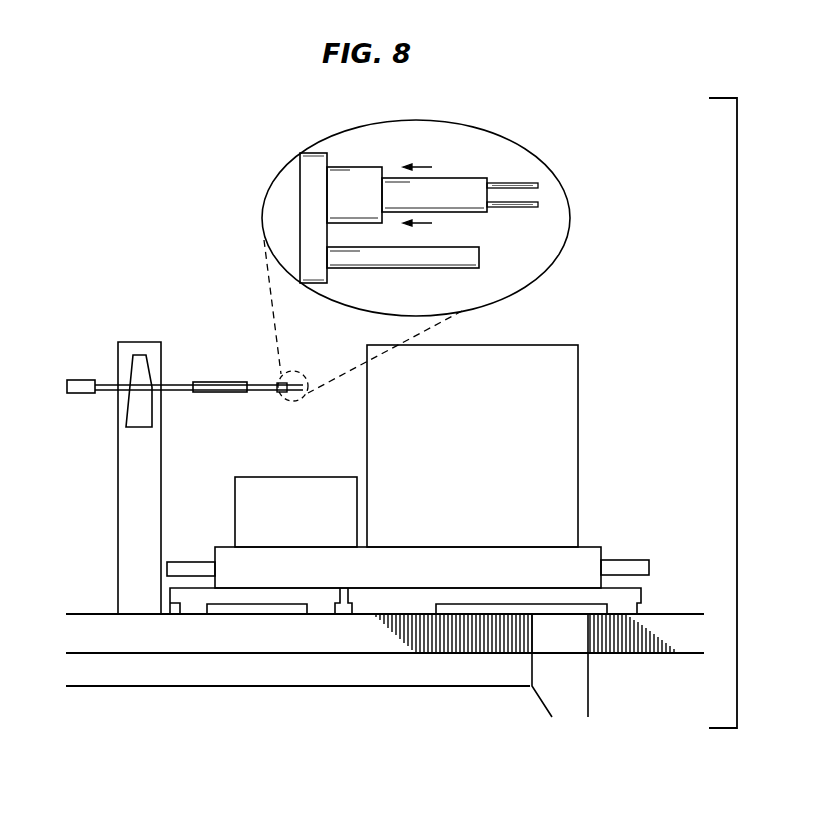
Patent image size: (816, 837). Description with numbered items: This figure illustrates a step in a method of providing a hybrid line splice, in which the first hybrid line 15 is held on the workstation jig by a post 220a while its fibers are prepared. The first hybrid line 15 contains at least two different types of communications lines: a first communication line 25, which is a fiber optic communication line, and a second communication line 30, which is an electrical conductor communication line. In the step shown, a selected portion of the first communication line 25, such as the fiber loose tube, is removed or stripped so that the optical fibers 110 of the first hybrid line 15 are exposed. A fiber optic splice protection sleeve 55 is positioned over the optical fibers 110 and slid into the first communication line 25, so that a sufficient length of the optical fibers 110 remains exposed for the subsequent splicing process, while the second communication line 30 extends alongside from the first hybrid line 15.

The first hybrid line 15 is at (310, 229).
The first communication line 25 is at (350, 177).
The fiber optic splice protection sleeve 55 is at (451, 187).
The optical fibers 110 is at (530, 190).
The second communication line 30 is at (480, 258).
The post 220a is at (138, 383).